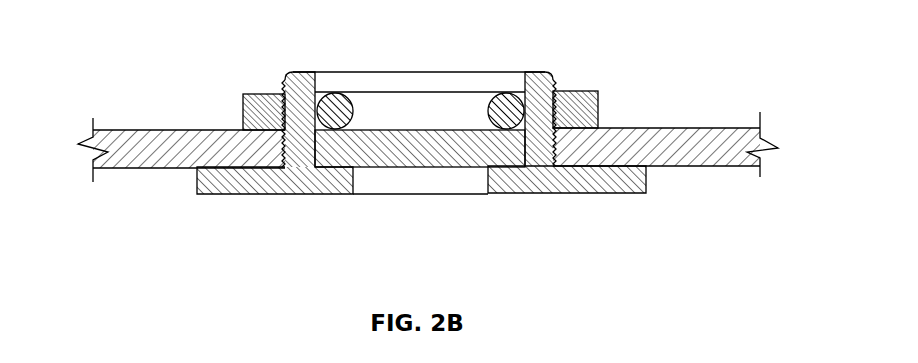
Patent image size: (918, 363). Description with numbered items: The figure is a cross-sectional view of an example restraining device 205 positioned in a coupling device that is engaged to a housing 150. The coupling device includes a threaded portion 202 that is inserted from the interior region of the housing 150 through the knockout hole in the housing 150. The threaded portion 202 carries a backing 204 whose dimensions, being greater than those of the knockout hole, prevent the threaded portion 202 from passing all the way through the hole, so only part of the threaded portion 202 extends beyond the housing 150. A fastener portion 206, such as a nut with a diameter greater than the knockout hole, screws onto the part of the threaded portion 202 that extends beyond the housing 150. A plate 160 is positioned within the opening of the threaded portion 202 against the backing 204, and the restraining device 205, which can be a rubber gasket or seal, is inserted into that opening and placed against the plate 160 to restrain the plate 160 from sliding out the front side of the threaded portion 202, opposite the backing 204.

The housing 150 is at (698, 128).
The plate 160 is at (397, 148).
The threaded portion 202 is at (302, 78).
The backing 204 is at (247, 188).
The restraining device 205 is at (338, 106).
The fastener portion 206 is at (262, 100).